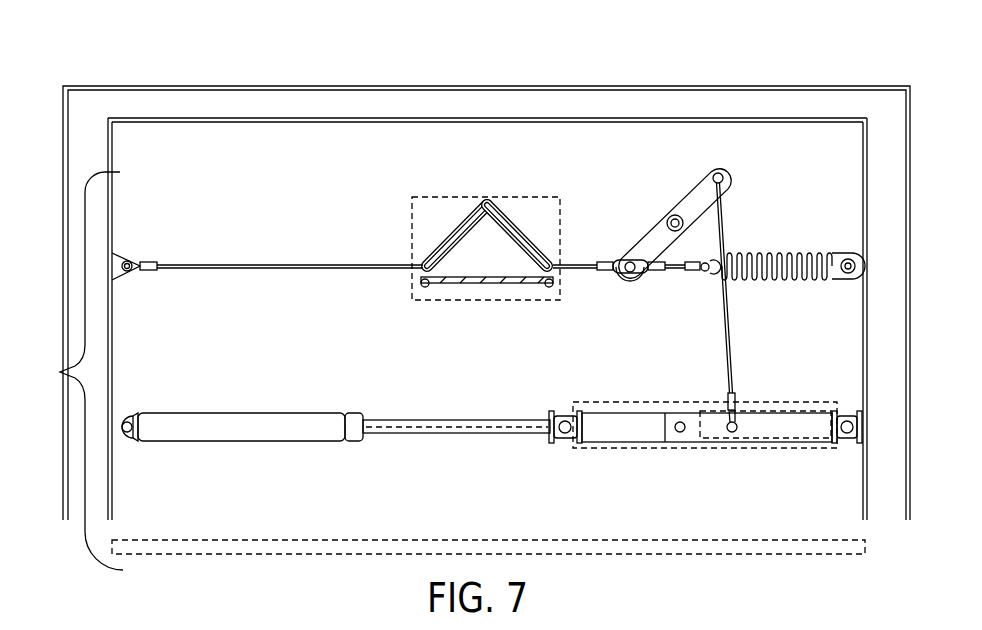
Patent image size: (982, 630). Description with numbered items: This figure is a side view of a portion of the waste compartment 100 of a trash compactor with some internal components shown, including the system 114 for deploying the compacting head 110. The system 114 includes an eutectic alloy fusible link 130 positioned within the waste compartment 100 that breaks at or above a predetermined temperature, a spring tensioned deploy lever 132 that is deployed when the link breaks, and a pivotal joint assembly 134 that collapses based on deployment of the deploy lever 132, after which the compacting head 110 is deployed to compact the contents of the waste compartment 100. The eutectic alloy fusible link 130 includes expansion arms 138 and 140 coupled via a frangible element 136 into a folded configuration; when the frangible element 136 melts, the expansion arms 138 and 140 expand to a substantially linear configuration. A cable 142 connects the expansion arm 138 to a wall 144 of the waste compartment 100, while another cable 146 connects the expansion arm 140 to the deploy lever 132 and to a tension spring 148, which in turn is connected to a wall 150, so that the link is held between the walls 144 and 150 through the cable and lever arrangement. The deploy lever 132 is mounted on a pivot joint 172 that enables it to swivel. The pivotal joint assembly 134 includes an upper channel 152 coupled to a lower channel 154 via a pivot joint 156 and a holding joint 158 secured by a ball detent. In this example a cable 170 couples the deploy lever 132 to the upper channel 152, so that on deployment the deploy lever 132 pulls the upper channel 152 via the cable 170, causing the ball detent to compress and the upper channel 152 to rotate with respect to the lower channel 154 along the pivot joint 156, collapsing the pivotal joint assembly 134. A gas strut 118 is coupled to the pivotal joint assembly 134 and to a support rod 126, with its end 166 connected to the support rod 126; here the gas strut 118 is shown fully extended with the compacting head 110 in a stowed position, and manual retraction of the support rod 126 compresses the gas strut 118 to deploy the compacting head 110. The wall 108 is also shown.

The waste compartment 100 is at (294, 84).
The inner frame 108 is at (566, 129).
The compacting head 110 is at (274, 557).
The system 114 is at (60, 372).
The gas strut 118 is at (261, 445).
The support rod 126 is at (128, 417).
The eutectic alloy fusible link 130 is at (449, 191).
The spring tensioned deploy lever 132 is at (682, 184).
The pivotal joint assembly 134 is at (758, 397).
The frangible element 136 is at (481, 286).
The expansion arm 138 is at (424, 248).
The expansion arm 140 is at (549, 246).
The cable 142 is at (276, 271).
The wall 144 is at (119, 139).
The cable 146 is at (605, 277).
The tension spring 148 is at (766, 249).
The wall 150 is at (861, 154).
The upper channel 152 is at (606, 417).
The lower channel 154 is at (788, 422).
The pivot joint 156 is at (666, 417).
The holding joint 158 is at (738, 429).
The end 166 is at (126, 443).
The cable 170 is at (736, 315).
The pivot joint 172 is at (664, 216).